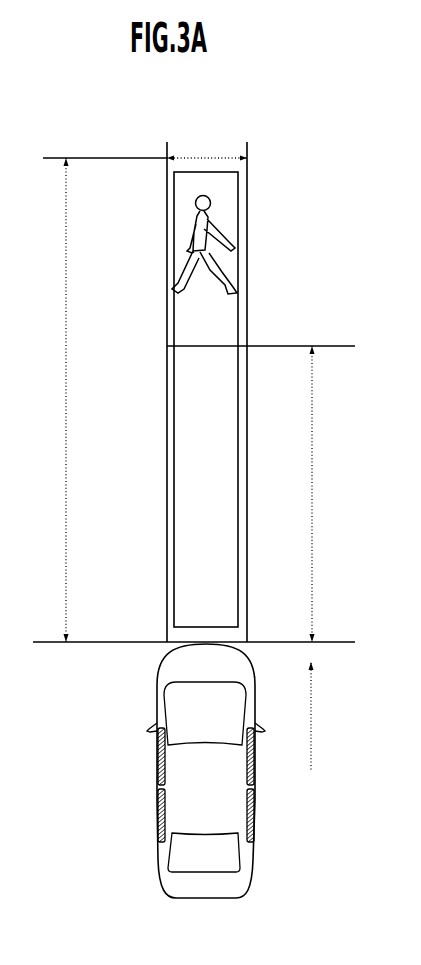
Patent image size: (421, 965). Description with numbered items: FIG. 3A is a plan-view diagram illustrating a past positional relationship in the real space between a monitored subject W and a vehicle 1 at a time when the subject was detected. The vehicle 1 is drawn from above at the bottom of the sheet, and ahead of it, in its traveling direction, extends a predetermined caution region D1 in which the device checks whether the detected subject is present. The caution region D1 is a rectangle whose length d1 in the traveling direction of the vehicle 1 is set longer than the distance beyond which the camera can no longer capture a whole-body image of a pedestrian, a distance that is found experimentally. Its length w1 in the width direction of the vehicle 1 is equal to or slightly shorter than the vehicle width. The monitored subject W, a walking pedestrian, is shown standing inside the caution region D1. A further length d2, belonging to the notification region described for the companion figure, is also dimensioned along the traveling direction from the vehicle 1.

The vehicle 1 is at (157, 817).
The monitored subject W is at (193, 232).
The caution region D1 is at (238, 222).
The length in the width direction w1 is at (207, 137).
The length in the traveling direction d1 is at (92, 400).
The length in the traveling direction d2 is at (264, 558).